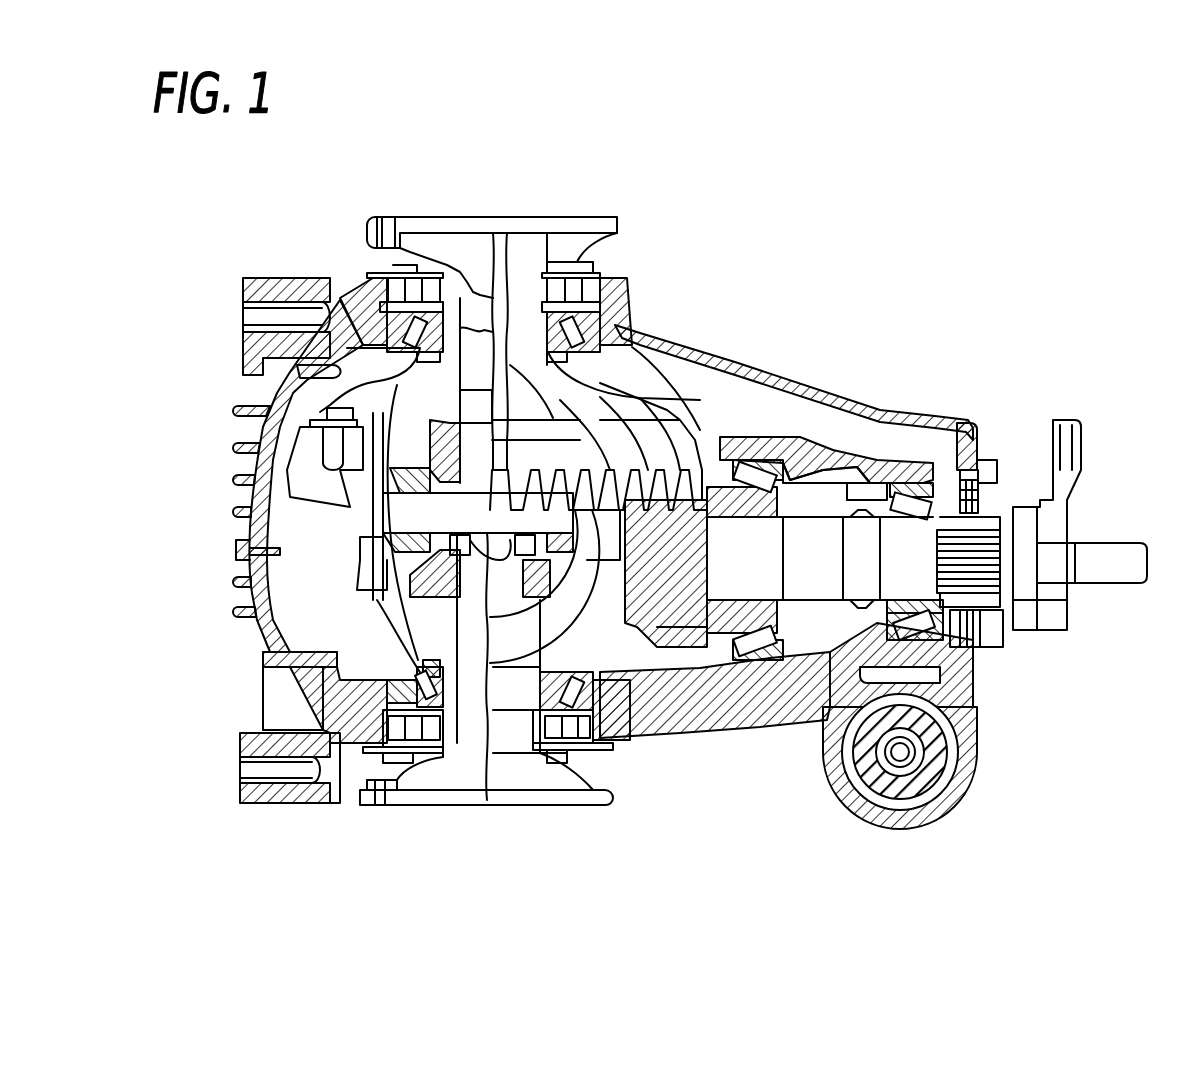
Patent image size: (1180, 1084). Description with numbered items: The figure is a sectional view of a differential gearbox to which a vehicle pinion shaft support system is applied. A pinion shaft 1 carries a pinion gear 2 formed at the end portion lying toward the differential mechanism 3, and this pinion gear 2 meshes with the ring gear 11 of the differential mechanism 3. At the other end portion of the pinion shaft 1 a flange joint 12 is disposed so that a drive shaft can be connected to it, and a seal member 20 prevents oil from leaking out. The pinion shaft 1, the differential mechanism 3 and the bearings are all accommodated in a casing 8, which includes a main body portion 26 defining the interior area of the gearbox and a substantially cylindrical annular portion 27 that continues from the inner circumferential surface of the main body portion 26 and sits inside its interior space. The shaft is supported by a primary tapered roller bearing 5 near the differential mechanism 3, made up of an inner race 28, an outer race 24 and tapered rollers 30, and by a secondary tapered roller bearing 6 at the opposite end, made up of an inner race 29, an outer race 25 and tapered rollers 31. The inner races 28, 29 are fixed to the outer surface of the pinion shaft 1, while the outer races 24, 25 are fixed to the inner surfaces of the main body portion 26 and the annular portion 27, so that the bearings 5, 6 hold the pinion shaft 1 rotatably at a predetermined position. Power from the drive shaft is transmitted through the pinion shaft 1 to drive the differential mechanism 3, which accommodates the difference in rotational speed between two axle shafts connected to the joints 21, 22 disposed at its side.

The pinion shaft 1 is at (826, 565).
The pinion gear 2 is at (667, 570).
The differential mechanism 3 is at (606, 381).
The primary tapered roller bearing 5 is at (752, 447).
The secondary tapered roller bearing 6 is at (923, 477).
The casing 8 is at (990, 703).
The ring gear 11 is at (527, 460).
The flange joint 12 is at (1062, 490).
The seal member 20 is at (1002, 485).
The joint 21 is at (445, 292).
The joint 22 is at (487, 800).
The outer race 24 is at (766, 650).
The outer race 25 is at (897, 705).
The main body portion 26 is at (720, 672).
The annular portion 27 is at (845, 463).
The inner race 28 is at (693, 490).
The inner race 29 is at (947, 497).
The tapered rollers 30 is at (723, 483).
The tapered rollers 31 is at (992, 643).